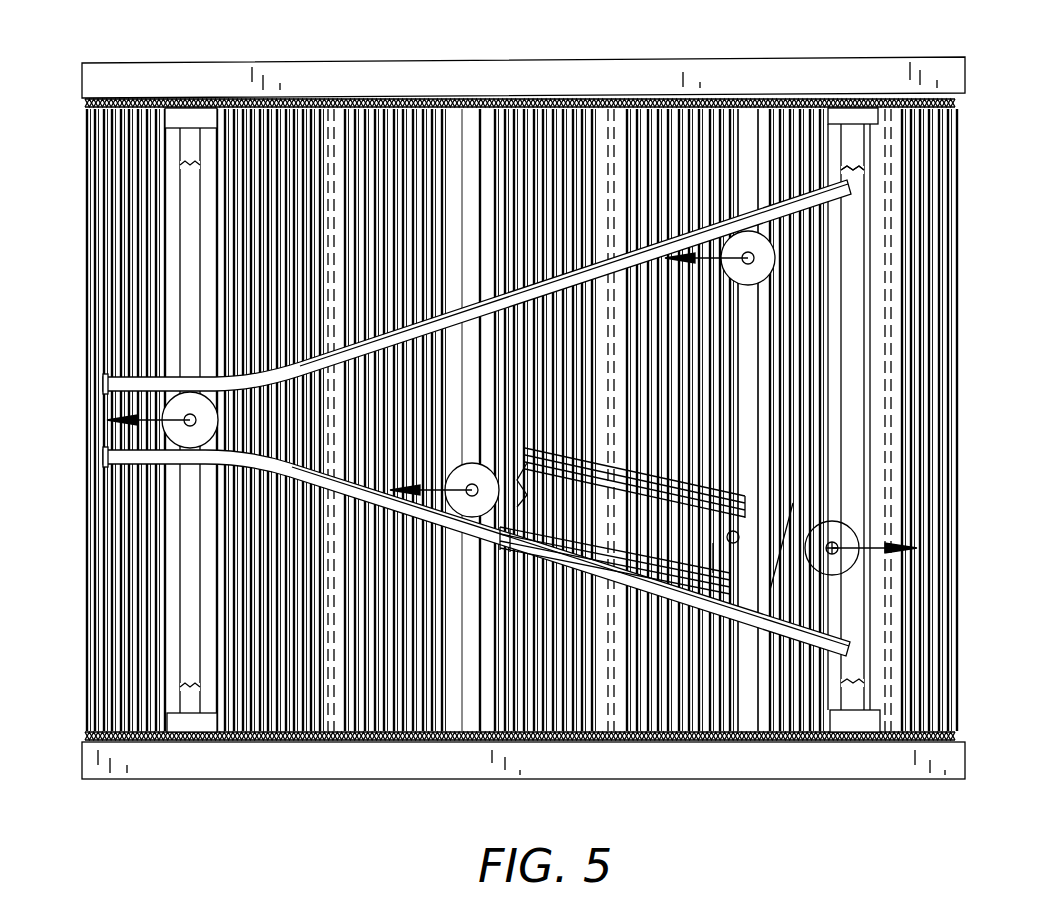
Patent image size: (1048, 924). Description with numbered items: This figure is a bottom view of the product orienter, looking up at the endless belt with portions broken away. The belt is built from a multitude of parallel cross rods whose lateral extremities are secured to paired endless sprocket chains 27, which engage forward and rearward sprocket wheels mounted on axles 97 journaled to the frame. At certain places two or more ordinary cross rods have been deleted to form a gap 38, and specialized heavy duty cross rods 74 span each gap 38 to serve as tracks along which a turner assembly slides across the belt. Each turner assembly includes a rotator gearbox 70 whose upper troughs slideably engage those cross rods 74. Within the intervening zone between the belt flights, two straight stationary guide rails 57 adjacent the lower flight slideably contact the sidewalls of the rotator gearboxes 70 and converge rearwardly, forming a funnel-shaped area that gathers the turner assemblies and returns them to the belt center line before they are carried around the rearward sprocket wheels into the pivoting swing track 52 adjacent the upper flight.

The sprocket chains 27 is at (362, 100).
The specialized heavy duty cross rods 74 is at (487, 122).
The stationary guide rails 57 is at (750, 215).
The axles 97 is at (850, 148).
The rotator gearbox 70 is at (172, 440).
The swing track 52 is at (742, 463).
The gap 38 is at (752, 707).